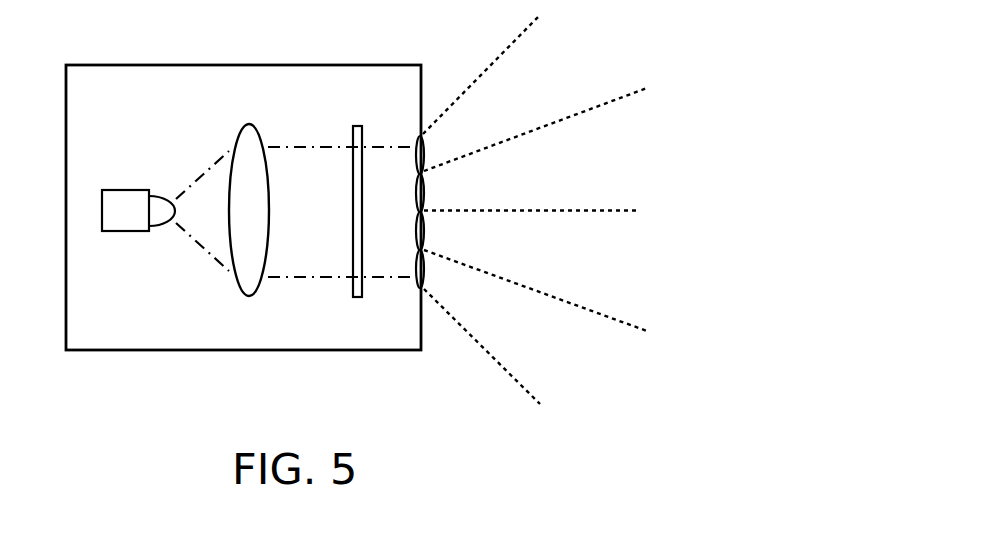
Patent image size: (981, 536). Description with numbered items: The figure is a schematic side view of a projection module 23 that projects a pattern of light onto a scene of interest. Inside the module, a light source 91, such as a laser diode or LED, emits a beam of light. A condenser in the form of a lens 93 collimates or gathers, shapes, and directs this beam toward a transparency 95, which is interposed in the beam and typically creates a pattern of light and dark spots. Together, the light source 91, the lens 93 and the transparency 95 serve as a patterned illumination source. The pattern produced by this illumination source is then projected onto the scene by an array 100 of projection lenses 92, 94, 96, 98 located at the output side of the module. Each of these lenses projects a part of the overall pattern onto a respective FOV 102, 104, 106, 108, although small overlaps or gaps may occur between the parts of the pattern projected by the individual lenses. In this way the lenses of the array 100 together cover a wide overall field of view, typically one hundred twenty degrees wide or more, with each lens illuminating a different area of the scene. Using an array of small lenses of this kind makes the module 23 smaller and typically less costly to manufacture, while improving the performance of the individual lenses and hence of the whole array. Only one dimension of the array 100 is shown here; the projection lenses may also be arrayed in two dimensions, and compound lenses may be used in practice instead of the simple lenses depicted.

The projection module 23 is at (116, 65).
The light source 91 is at (123, 190).
The lens 93 is at (240, 129).
The transparency 95 is at (354, 126).
The projection lens 92 is at (424, 139).
The projection lens 94 is at (424, 190).
The projection lens 96 is at (424, 228).
The projection lens 98 is at (407, 295).
The array of projection lenses 100 is at (426, 233).
The FOV 102 is at (599, 89).
The FOV 104 is at (599, 177).
The FOV 106 is at (599, 267).
The FOV 108 is at (599, 361).